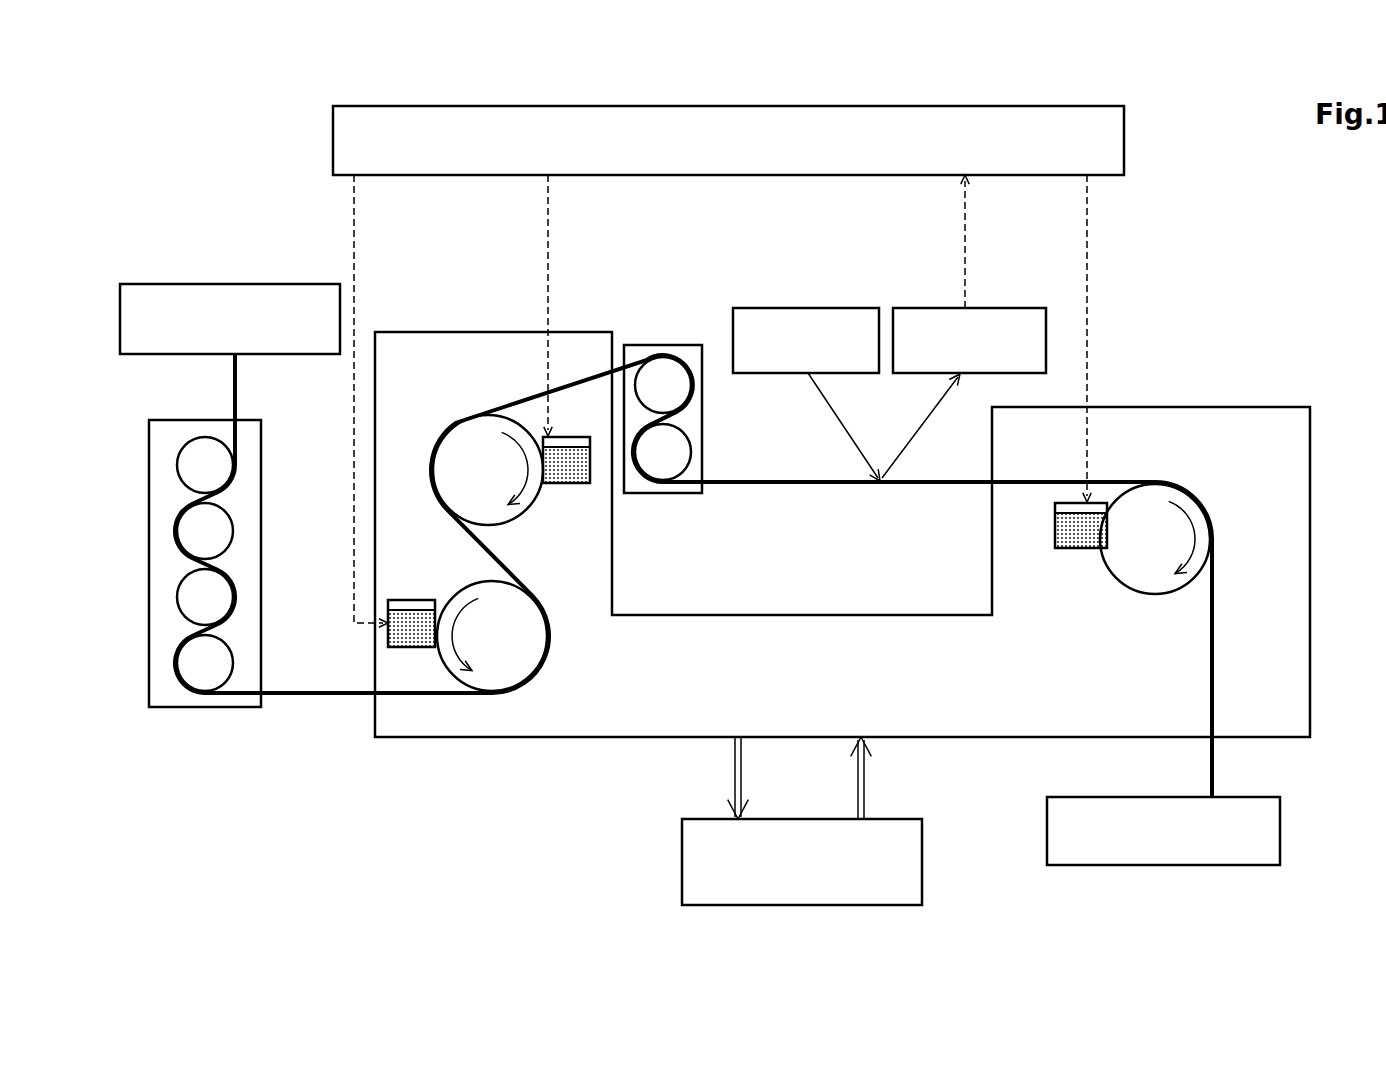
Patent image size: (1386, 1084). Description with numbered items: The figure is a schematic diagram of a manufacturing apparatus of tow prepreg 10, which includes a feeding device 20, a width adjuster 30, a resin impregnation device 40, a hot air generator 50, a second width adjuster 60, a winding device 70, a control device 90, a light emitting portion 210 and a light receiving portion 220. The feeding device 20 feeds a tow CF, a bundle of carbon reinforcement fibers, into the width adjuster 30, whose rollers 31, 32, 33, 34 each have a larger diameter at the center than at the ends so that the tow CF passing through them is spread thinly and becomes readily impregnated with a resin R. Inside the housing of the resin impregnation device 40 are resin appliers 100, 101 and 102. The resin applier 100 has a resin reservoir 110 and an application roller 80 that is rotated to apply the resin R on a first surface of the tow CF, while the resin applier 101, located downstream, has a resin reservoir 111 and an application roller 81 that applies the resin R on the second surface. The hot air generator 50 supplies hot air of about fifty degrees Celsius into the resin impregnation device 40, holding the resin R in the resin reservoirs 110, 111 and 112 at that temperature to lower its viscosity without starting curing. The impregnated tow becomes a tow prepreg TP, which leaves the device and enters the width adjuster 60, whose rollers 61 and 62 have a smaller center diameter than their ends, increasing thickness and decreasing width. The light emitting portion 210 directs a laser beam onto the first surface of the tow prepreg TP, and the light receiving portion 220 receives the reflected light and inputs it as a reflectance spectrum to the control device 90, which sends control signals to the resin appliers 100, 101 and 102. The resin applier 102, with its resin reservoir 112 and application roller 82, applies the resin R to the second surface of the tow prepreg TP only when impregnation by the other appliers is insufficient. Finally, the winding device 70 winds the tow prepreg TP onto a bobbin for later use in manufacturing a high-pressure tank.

The manufacturing apparatus of tow prepreg 10 is at (1200, 133).
The feeding device 20 is at (270, 284).
The width adjuster 30 is at (222, 584).
The roller 31 is at (177, 463).
The roller 32 is at (233, 533).
The roller 33 is at (177, 598).
The roller 34 is at (233, 662).
The resin impregnation device 40 is at (583, 332).
The hot air generator 50 is at (898, 819).
The width adjuster 60 is at (682, 428).
The roller 61 is at (641, 403).
The roller 62 is at (692, 448).
The winding device 70 is at (1240, 797).
The application roller 80 is at (481, 581).
The application roller 81 is at (505, 521).
The application roller 82 is at (1157, 482).
The control device 90 is at (1124, 142).
The resin applier 100 is at (462, 587).
The resin applier 101 is at (525, 500).
The resin applier 102 is at (1170, 522).
The resin reservoir 110 is at (435, 600).
The resin reservoir 111 is at (558, 437).
The resin reservoir 112 is at (1066, 548).
The light emitting portion 210 is at (870, 308).
The light receiving portion 220 is at (1030, 308).
The tow CF is at (240, 393).
The tow prepreg TP is at (733, 485).
The resin R is at (403, 633).